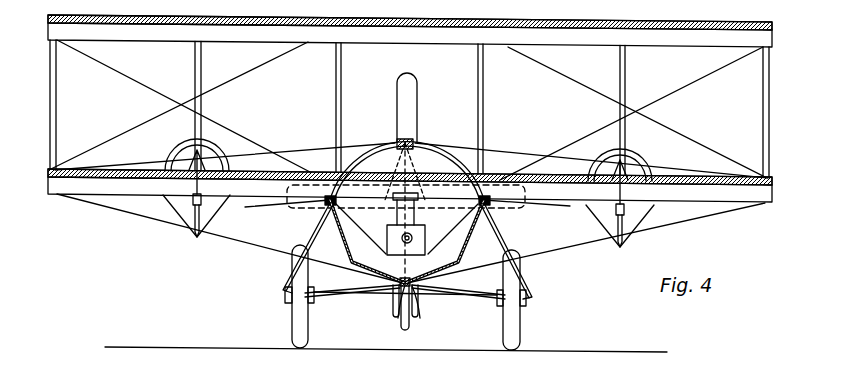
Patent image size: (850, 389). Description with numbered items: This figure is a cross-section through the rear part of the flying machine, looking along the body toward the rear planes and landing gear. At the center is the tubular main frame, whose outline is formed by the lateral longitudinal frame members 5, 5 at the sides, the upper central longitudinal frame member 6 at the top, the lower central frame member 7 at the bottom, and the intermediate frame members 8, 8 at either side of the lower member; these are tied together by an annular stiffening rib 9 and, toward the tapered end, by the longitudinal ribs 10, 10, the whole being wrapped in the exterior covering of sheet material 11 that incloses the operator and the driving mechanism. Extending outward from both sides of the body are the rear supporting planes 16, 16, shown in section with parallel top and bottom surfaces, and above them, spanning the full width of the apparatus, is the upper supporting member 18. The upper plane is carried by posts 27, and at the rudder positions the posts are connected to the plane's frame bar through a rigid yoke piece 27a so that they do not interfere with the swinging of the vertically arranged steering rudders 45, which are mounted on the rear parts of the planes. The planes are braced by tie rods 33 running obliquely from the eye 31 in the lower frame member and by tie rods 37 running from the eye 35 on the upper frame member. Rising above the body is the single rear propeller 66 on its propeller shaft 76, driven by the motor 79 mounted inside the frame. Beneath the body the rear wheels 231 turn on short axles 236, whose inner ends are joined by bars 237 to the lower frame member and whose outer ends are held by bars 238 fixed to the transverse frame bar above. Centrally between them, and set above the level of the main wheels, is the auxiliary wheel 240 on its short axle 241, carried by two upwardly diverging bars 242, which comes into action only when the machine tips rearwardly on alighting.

The lateral longitudinal frame member 5 is at (294, 214).
The upper central longitudinal frame member 6 is at (400, 141).
The lower central frame member 7 is at (418, 280).
The intermediate frame member 8 is at (405, 282).
The annular stiffening rib 9 is at (332, 242).
The longitudinal rib 10 is at (350, 226).
The exterior covering of sheet material 11 is at (432, 148).
The rear supporting plane 16 is at (118, 180).
The upper supporting member 18 is at (190, 24).
The post 27 is at (50, 80).
The yoke piece 27a is at (183, 150).
The eye 31 is at (398, 301).
The tie rod 33 is at (228, 240).
The eye 35 is at (418, 128).
The tie rod 37 is at (513, 152).
The steering rudder 45 is at (194, 228).
The rear propeller 66 is at (397, 87).
The propeller shaft 76 is at (400, 249).
The motor 79 is at (403, 203).
The rear wheel 231 is at (296, 324).
The axle 236 is at (285, 300).
The bar 237 is at (393, 290).
The bar 238 is at (292, 252).
The auxiliary wheel 240 is at (404, 332).
The short axle 241 is at (418, 302).
The upwardly diverging bar 242 is at (392, 284).